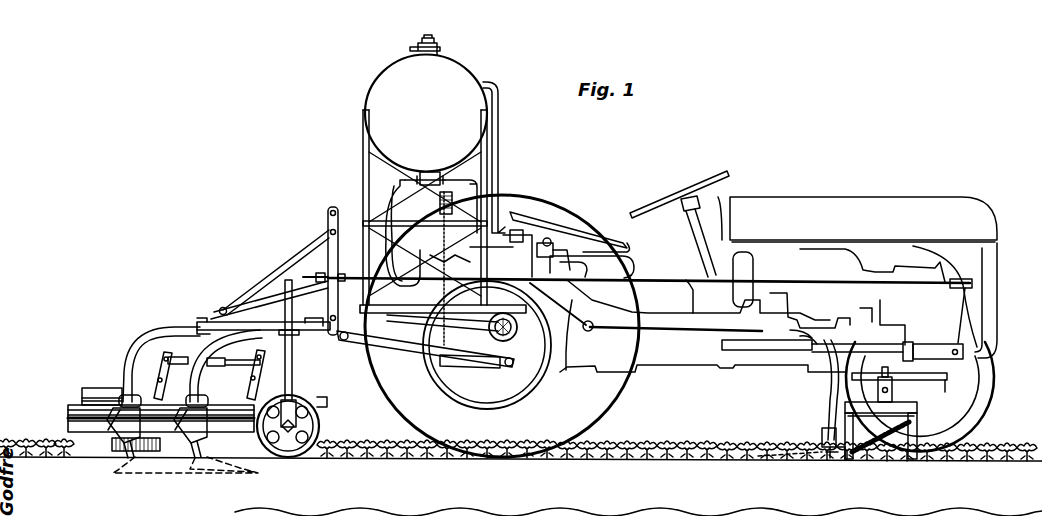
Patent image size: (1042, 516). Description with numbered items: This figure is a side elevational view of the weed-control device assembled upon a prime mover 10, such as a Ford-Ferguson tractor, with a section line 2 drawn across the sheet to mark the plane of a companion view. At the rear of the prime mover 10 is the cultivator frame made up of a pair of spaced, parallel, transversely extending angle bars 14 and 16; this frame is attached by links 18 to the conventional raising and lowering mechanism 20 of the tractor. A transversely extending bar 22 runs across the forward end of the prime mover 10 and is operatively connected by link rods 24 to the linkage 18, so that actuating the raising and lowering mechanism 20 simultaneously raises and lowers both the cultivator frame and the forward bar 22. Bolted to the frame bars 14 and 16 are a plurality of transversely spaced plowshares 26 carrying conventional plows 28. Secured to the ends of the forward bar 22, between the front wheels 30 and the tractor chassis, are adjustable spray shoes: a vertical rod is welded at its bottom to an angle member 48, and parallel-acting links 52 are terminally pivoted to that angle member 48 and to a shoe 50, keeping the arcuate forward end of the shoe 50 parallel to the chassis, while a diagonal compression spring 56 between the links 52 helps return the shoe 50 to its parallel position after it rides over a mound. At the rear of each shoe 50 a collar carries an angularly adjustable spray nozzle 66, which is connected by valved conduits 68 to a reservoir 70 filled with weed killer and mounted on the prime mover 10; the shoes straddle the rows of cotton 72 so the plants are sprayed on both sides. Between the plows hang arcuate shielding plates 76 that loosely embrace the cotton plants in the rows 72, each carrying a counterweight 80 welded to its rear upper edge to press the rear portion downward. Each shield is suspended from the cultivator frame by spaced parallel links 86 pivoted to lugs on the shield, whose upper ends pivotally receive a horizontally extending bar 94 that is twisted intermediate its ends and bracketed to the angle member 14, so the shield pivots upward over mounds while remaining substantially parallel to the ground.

The section line 2- 2 is at (345, 165).
The prime mover 10 is at (808, 196).
The angle bar 14 is at (213, 316).
The angle bar 16 is at (322, 321).
The links 18 is at (300, 256).
The raising and lowering mechanism 20 is at (540, 246).
The transversely extending bar 22 is at (472, 512).
The link rods 24 is at (655, 279).
The plowshares 26 is at (157, 340).
The plows 28 is at (157, 474).
The front wheels 30 is at (985, 372).
The angle member 48 is at (945, 382).
The shoe 50 is at (920, 455).
The parallel-acting links 52 is at (915, 440).
The diagonal compression spring 56 is at (870, 455).
The spray nozzle 66 is at (824, 460).
The valved conduits 68 is at (830, 383).
The reservoir 70 is at (389, 81).
The rows of cotton 72 is at (648, 440).
The arcuate shielding plates 76 is at (320, 402).
The counterweight 80 is at (95, 394).
The links 86 is at (252, 380).
The horizontally extending bar 94 is at (250, 357).